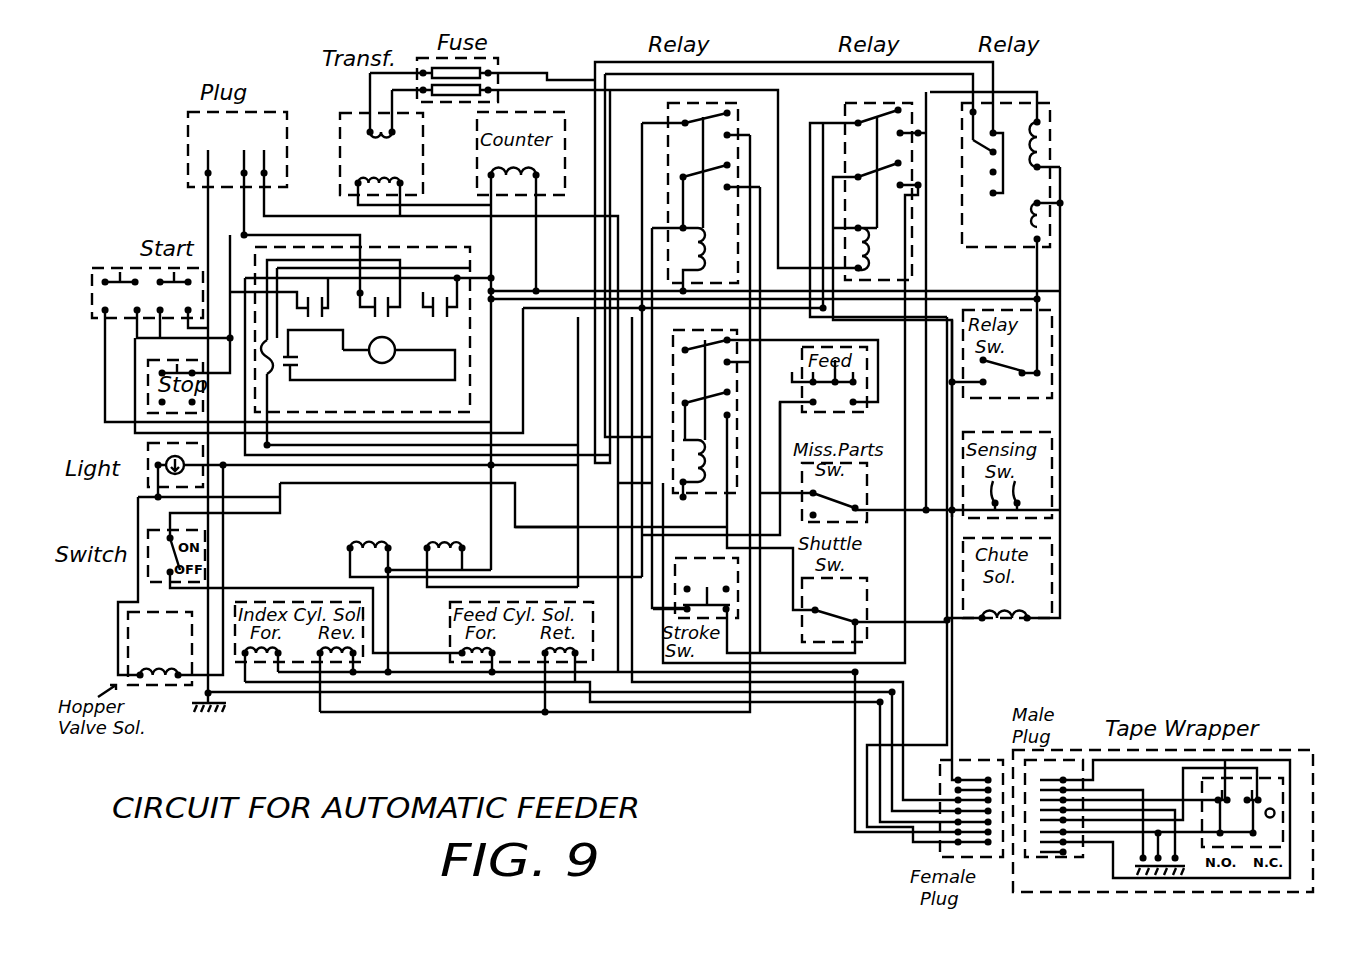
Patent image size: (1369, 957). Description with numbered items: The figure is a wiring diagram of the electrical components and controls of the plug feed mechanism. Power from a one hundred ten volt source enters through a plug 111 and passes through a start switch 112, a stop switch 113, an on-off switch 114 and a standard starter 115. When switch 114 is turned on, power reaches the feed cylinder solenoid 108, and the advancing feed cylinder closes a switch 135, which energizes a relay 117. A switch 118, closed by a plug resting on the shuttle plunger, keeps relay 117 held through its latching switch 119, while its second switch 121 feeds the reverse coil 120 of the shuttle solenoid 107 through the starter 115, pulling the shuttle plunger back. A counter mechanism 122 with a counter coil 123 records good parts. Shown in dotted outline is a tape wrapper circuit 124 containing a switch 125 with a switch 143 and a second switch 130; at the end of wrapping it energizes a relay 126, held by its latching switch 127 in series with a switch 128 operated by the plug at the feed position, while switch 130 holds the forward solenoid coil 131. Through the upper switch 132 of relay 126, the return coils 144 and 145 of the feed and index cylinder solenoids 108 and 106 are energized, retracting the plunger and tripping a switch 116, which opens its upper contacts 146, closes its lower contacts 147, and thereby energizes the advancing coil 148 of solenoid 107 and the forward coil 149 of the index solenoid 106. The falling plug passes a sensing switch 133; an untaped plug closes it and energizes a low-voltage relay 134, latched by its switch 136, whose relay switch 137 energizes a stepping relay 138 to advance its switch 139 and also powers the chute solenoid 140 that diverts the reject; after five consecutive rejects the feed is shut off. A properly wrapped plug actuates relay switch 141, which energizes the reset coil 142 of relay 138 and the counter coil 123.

The index cylinder solenoid 106 is at (290, 600).
The solenoid 107 is at (414, 548).
The feed cylinder solenoid 108 is at (510, 600).
The plug 111 is at (188, 115).
The start switch 112 is at (113, 270).
The stop switch 113 is at (155, 372).
The on-off switch 114 is at (160, 533).
The starter 115 is at (430, 253).
The switch 116 is at (865, 366).
The relay 117 is at (668, 118).
The switch 118 is at (865, 478).
The switch 119 is at (720, 167).
The reverse coil 120 is at (450, 539).
The second switch 121 is at (722, 112).
The counter mechanism 122 is at (478, 170).
The counter coil 123 is at (491, 175).
The tape wrapper circuit 124 is at (1313, 801).
The switch 125 is at (1276, 812).
The relay 126 is at (673, 377).
The latching switch 127 is at (692, 401).
The switch 128 is at (865, 592).
The second switch 130 is at (1252, 797).
The forward solenoid coil 131 is at (477, 658).
The upper switch 132 is at (727, 340).
The sensing switch 133 is at (1052, 473).
The relay 134 is at (846, 122).
The switch 135 is at (713, 561).
The switch 136 is at (882, 172).
The relay switch 137 is at (880, 117).
The stepping relay 138 is at (1050, 130).
The switch 139 is at (980, 159).
The chute solenoid 140 is at (1052, 573).
The relay switch 141 is at (1008, 400).
The reset coil 142 is at (1030, 222).
The switch 143 is at (1218, 794).
The return coil 144 is at (560, 657).
The return coil 145 is at (340, 657).
The upper contacts 146 is at (806, 382).
The lower contacts 147 is at (843, 408).
The advancing coil 148 is at (358, 541).
The forward coil 149 is at (260, 657).